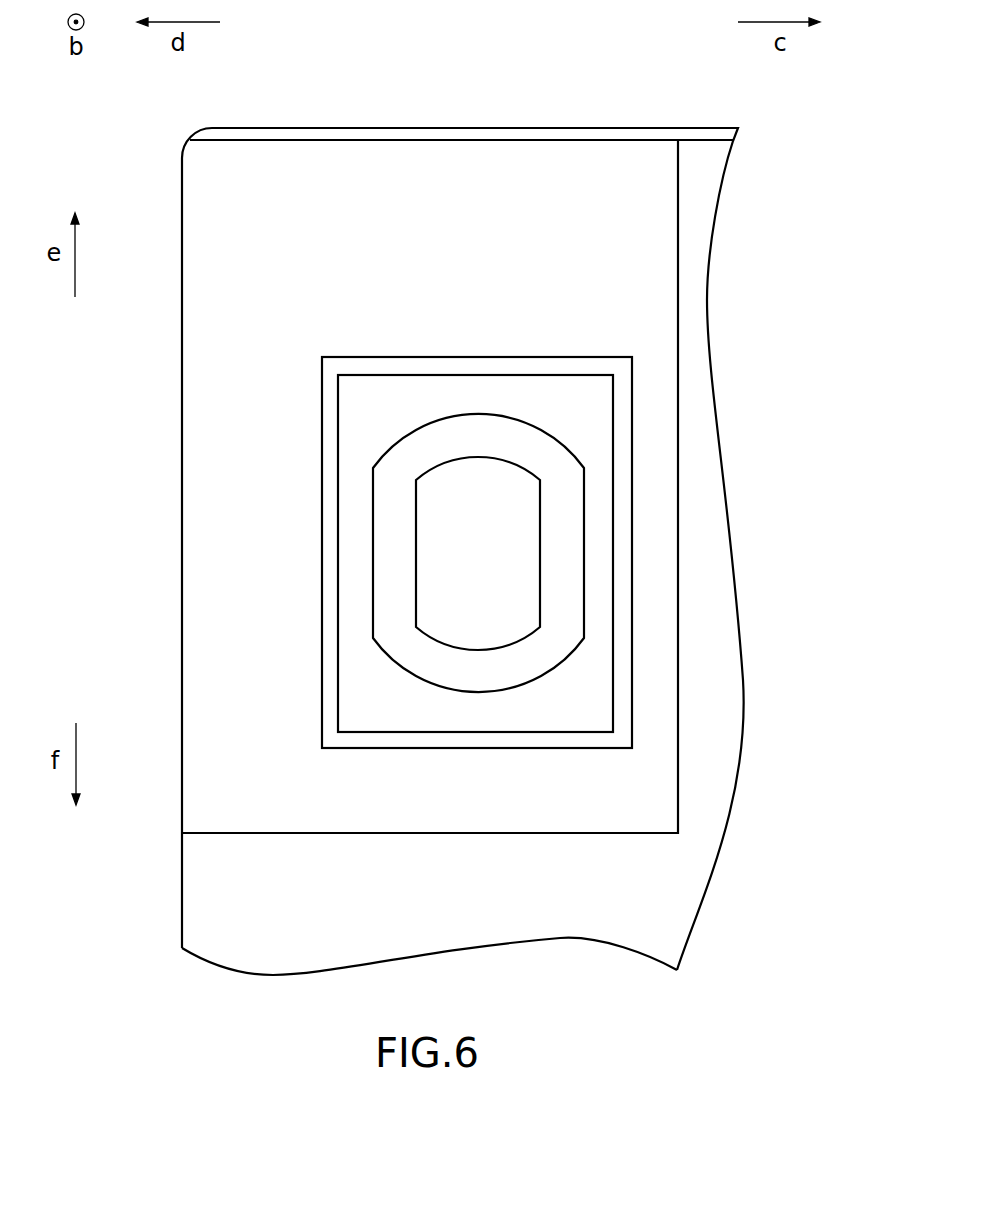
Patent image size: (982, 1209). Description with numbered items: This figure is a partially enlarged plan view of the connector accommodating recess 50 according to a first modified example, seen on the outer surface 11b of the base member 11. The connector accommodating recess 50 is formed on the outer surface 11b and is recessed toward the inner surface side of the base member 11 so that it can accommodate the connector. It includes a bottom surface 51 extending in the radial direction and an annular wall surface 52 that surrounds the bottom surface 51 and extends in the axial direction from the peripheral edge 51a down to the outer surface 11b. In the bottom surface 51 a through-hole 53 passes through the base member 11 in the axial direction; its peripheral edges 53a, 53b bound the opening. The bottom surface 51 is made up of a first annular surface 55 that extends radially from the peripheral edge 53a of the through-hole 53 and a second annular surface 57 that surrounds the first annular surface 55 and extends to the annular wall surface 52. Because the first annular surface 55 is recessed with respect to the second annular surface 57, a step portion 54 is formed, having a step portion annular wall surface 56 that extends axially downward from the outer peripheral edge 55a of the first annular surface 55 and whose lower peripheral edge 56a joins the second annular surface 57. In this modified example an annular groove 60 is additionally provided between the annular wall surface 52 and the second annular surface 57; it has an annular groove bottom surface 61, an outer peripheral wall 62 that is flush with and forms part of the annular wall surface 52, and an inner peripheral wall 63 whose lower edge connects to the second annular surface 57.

The base member 11 is at (172, 857).
The outer surface 11b is at (690, 888).
The connector accommodating recess 50 is at (305, 697).
The bottom surface 51 is at (523, 403).
The peripheral edge 51a is at (428, 748).
The annular wall surface 52 is at (325, 628).
The through-hole 53 is at (485, 583).
The peripheral edge of the through-hole 53a is at (540, 548).
The opening side edge 53b is at (540, 582).
The step portion 54 is at (563, 492).
The first annular surface 55 is at (457, 442).
The outer peripheral edge of the first annular surface 55a is at (498, 692).
The step portion annular wall surface 56 is at (374, 467).
The lower peripheral edge of the step portion annular wall surface 56a is at (430, 421).
The second annular surface 57 is at (357, 558).
The annular groove 60 is at (327, 380).
The annular groove bottom surface 61 is at (330, 428).
The outer peripheral wall 62 is at (325, 528).
The inner peripheral wall 63 is at (378, 732).